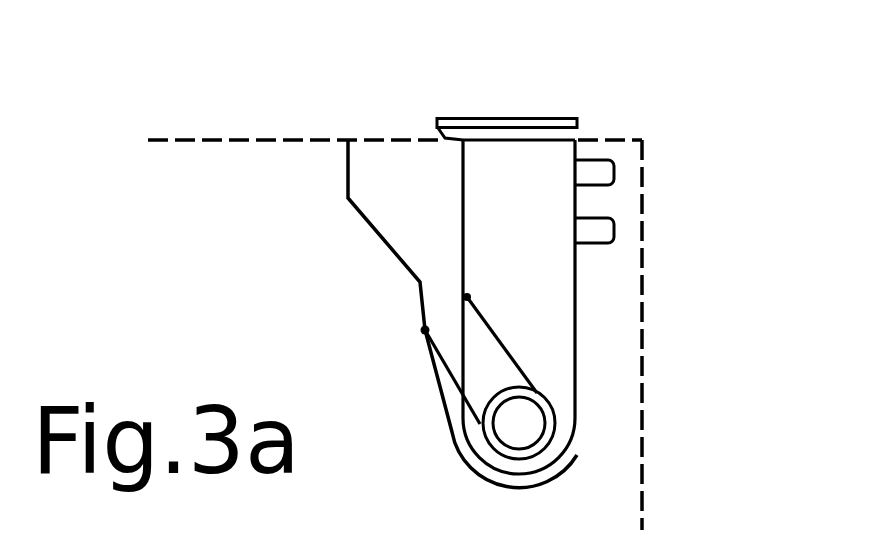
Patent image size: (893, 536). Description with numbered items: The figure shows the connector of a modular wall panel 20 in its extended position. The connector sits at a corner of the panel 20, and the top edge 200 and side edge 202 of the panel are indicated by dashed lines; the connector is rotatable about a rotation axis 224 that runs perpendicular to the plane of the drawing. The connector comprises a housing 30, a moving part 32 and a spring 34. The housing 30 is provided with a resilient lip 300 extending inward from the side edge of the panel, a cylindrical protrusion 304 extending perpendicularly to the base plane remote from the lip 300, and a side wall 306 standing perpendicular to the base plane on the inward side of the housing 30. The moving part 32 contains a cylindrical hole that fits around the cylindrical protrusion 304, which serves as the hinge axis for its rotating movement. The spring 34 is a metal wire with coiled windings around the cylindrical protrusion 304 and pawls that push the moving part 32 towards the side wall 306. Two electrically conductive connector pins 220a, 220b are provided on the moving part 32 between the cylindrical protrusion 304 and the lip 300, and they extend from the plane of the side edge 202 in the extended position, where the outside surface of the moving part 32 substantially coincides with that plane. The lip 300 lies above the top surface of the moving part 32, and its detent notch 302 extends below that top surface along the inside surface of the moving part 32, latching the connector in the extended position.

The panel 20 is at (630, 103).
The top edge 200 is at (257, 140).
The side edge 202 is at (645, 497).
The connector pin 220a is at (615, 173).
The connector pin 220b is at (615, 230).
The rotation axis 224 is at (519, 423).
The housing 30 is at (403, 277).
The moving part 32 is at (522, 302).
The spring 34 is at (523, 360).
The resilient lip 300 is at (525, 118).
The detent notch 302 is at (455, 145).
The cylindrical protrusion 304 is at (553, 416).
The side wall 306 is at (448, 402).